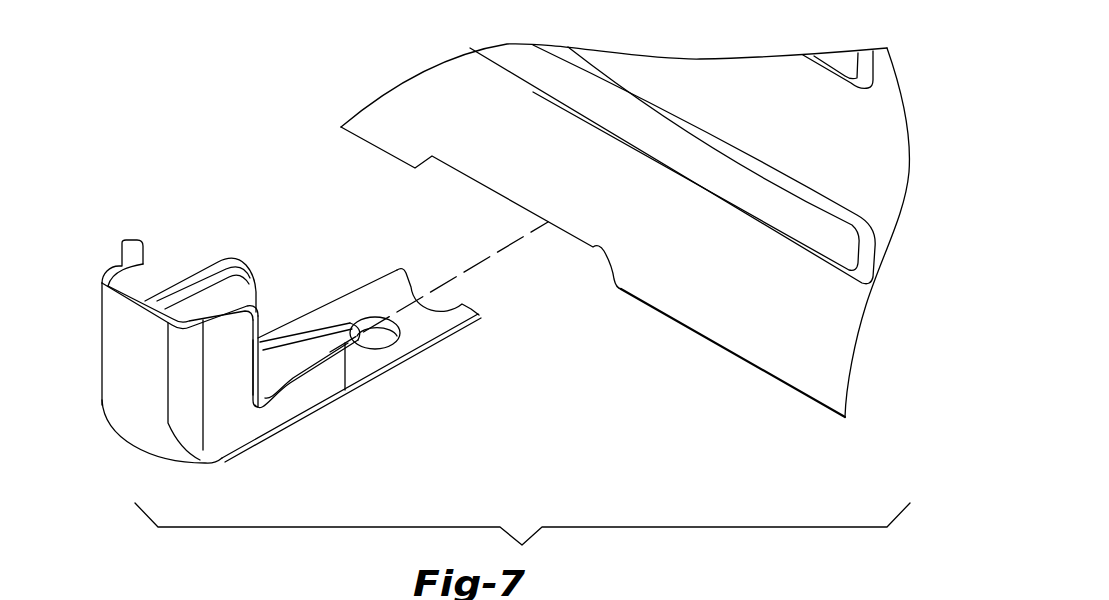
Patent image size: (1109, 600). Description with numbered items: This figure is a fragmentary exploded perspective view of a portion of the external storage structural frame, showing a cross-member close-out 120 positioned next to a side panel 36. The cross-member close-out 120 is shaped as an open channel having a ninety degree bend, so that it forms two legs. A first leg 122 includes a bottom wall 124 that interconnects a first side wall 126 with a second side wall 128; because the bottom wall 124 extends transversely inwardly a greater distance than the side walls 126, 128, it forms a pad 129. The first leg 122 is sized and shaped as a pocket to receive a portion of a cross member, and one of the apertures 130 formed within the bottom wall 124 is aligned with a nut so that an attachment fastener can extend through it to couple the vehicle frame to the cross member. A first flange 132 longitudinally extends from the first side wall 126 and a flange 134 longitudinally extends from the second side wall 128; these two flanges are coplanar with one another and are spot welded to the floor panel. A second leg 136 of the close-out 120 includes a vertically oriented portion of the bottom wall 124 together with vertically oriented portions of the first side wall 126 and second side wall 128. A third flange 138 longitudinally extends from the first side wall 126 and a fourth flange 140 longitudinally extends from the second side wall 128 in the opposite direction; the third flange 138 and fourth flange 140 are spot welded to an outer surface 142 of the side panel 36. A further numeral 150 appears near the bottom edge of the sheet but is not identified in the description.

The side panel 36 is at (593, 236).
The cross-member close-out 120 is at (314, 318).
The first leg 122 is at (388, 338).
The bottom wall 124 is at (337, 327).
The first side wall 126 is at (256, 290).
The second side wall 128 is at (312, 391).
The pad 129 is at (460, 316).
The aperture 130 is at (372, 322).
The first flange 132 is at (223, 260).
The flange 134 is at (325, 347).
The second leg 136 is at (126, 371).
The third flange 138 is at (143, 258).
The fourth flange 140 is at (250, 353).
The outer surface 142 is at (813, 377).
The fastener 150 is at (330, 598).